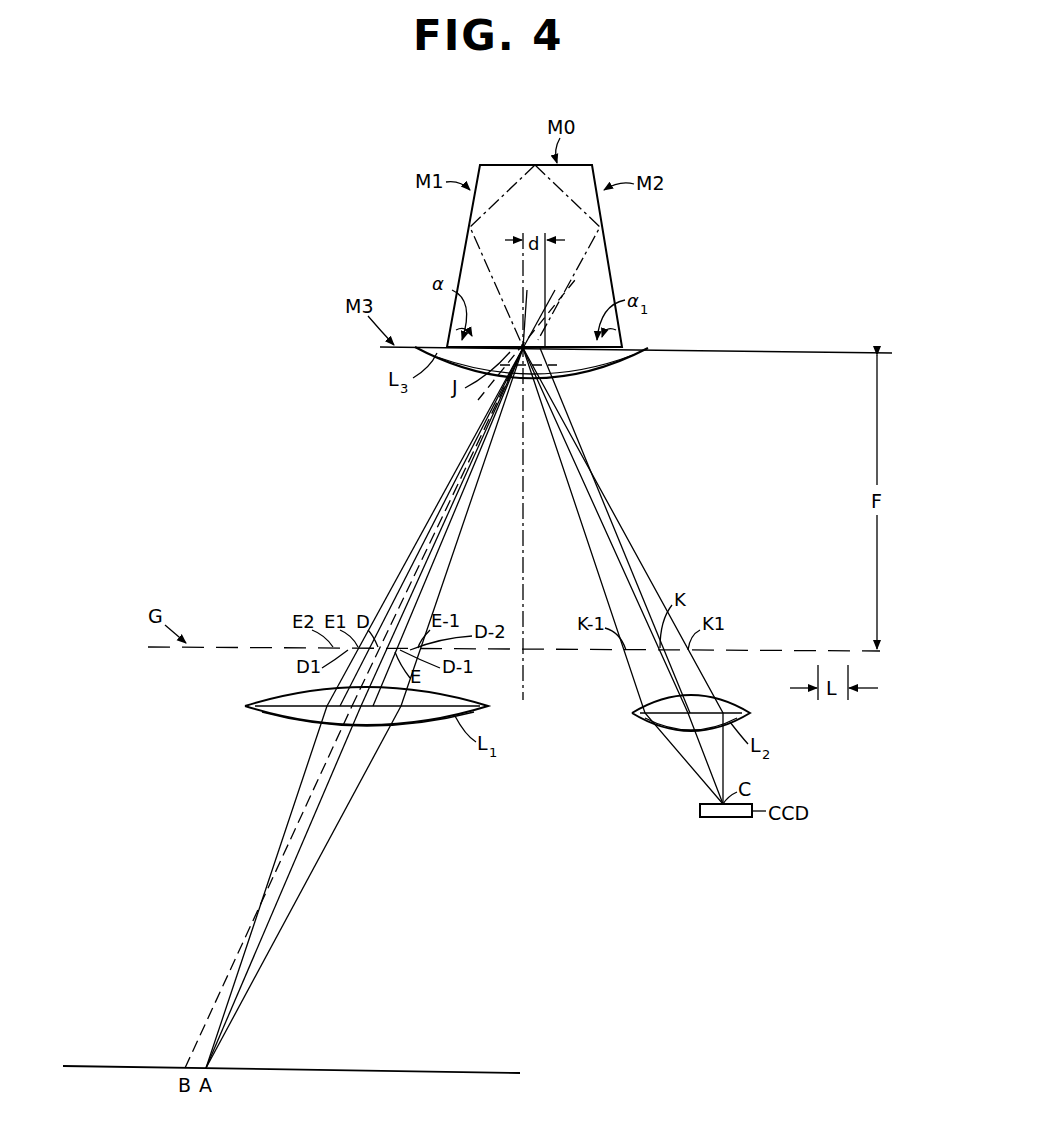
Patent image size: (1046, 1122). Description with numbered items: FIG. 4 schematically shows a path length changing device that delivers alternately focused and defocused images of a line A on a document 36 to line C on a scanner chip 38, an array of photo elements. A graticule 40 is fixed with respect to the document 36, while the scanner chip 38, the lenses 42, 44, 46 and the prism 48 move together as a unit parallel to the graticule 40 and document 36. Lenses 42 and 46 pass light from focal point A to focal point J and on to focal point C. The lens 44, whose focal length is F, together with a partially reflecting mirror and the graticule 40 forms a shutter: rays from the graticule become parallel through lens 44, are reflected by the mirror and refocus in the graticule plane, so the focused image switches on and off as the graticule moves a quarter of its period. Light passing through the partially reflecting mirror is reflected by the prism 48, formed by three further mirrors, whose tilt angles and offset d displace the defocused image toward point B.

The document 36 is at (462, 1070).
The scanner chip 38 is at (700, 811).
The graticule 40 is at (778, 652).
The lens 42 is at (268, 718).
The lens 44 is at (612, 372).
The lens 46 is at (645, 722).
The prism 48 is at (600, 272).